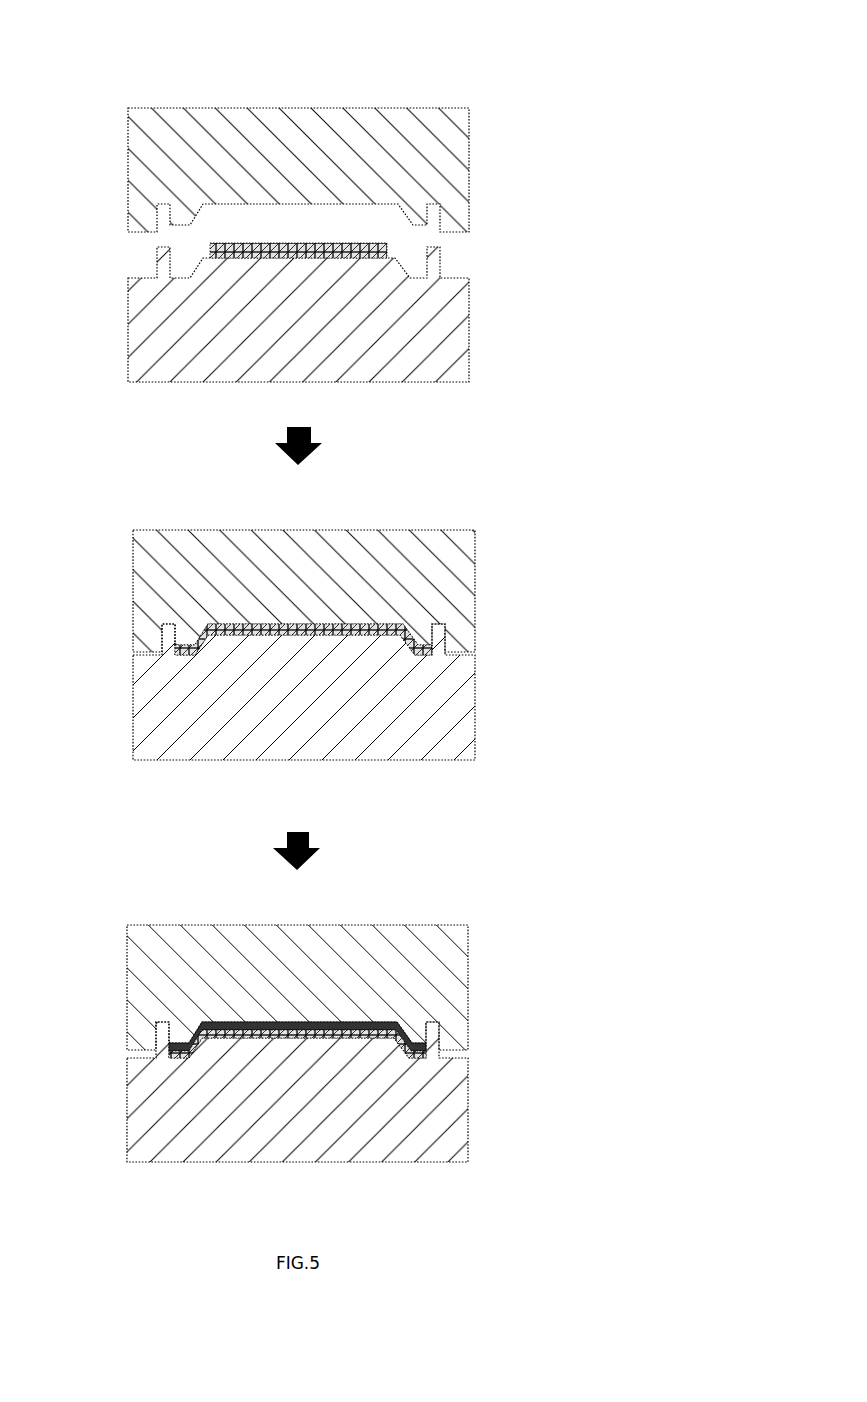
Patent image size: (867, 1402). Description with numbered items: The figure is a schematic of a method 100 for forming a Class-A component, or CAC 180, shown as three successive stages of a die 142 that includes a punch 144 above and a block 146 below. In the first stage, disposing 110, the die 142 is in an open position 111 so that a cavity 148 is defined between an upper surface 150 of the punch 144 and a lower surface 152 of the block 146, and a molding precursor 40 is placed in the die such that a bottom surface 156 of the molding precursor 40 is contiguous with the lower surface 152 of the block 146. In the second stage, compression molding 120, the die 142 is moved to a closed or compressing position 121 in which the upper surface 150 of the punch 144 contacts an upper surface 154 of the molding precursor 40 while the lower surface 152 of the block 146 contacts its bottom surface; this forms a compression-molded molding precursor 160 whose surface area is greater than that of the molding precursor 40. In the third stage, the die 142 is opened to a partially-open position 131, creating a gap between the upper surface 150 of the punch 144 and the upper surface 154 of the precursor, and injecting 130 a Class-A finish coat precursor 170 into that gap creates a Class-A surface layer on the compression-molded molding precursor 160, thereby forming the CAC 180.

The method 100 is at (410, 634).
The disposing 110 is at (610, 278).
The open position 111 is at (500, 122).
The compression molding 120 is at (610, 652).
The closed or compressing position 121 is at (503, 542).
The injecting 130 is at (610, 1052).
The partially-open position 131 is at (500, 925).
The molding precursor 40 is at (303, 635).
The die 142 is at (276, 557).
The punch 144 is at (220, 118).
The block 146 is at (372, 365).
The cavity 148 is at (360, 225).
The upper surface of the punch 150 is at (250, 205).
The lower surface of the block 152 is at (392, 258).
The upper surface of the molding precursor 154 is at (287, 242).
The bottom surface of the molding precursor 156 is at (281, 259).
The compression-molded molding precursor 160 is at (307, 642).
The Class-A finish coat precursor 170 is at (420, 1046).
The CAC 180 is at (329, 642).